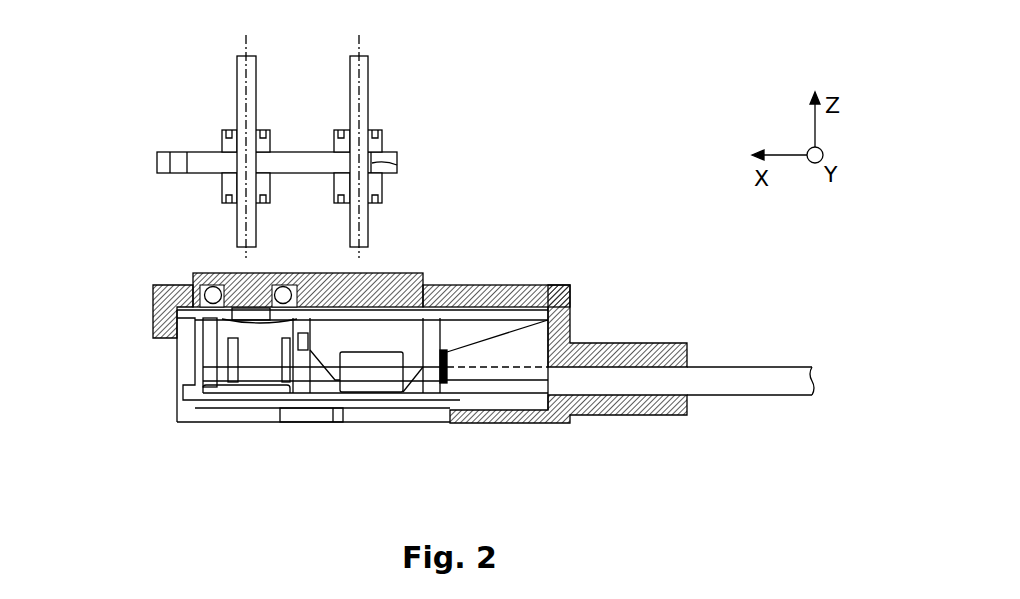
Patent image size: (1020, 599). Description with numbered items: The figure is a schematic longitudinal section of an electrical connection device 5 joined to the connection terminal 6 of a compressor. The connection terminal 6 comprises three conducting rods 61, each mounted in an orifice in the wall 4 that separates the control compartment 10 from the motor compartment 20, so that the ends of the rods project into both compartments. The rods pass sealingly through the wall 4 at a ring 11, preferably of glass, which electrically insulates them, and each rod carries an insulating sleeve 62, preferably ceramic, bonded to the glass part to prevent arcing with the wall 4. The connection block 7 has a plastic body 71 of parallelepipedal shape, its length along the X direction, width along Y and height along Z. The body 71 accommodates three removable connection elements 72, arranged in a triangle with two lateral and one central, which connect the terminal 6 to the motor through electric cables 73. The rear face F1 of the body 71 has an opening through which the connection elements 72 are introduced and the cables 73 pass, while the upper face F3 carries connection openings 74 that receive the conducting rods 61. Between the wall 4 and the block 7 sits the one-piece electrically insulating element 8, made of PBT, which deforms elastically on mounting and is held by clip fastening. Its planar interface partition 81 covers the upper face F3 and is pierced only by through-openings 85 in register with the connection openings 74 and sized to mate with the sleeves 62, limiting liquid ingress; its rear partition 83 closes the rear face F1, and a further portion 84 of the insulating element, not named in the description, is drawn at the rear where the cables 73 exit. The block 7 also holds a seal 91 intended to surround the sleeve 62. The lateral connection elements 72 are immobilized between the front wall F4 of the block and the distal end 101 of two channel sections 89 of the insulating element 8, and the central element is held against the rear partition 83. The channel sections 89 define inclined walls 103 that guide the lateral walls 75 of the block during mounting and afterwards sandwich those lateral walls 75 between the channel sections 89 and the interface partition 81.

The wall 4 is at (298, 160).
The electrical connection device 5 is at (128, 244).
The connection terminal 6 is at (198, 104).
The connection block 7 is at (350, 403).
The electrically insulating element 8 is at (505, 284).
The control compartment 10 is at (433, 112).
The ring 11 is at (395, 160).
The motor compartment 20 is at (430, 227).
The conducting rods 61 is at (248, 98).
The insulating sleeve 62 is at (228, 181).
The body 71 is at (190, 410).
The connection elements 72 is at (213, 357).
The electric cables 73 is at (757, 384).
The connection openings 74 is at (235, 308).
The lateral walls 75 is at (555, 287).
The interface partition 81 is at (533, 343).
The rear partition 83 is at (566, 306).
The clamp 84 is at (667, 343).
The through-openings 85 is at (276, 285).
The channel sections 89 is at (572, 297).
The seal 91 is at (212, 281).
The distal end 101 is at (446, 372).
The inclined walls 103 is at (481, 330).
The rear face F1 is at (549, 398).
The upper face F3 is at (422, 315).
The front wall F4 is at (188, 368).